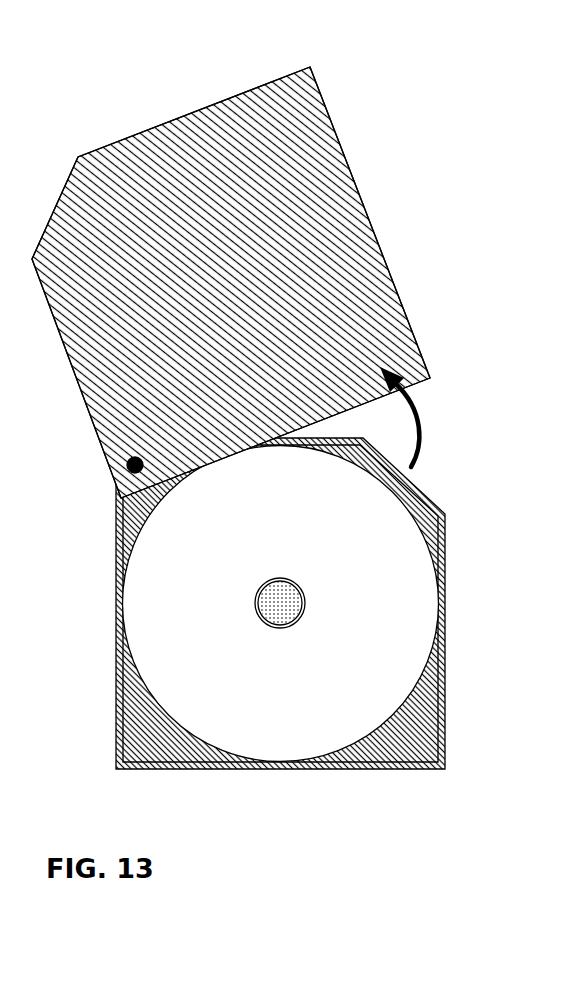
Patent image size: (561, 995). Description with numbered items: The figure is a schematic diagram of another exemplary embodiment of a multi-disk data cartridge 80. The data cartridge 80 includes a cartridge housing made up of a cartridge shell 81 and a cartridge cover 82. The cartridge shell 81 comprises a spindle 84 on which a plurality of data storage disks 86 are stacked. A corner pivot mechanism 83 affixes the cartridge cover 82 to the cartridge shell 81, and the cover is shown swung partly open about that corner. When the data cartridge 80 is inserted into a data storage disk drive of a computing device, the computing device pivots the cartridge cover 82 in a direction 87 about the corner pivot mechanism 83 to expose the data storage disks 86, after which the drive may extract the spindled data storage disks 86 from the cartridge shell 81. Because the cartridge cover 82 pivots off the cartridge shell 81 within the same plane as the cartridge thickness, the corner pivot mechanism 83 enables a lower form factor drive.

The multi-disk data cartridge 80 is at (243, 455).
The cartridge shell 81 is at (381, 760).
The cartridge cover 82 is at (325, 167).
The corner pivot mechanism 83 is at (118, 465).
The spindle 84 is at (250, 603).
The data storage disks 86 is at (396, 593).
The direction 87 is at (427, 420).